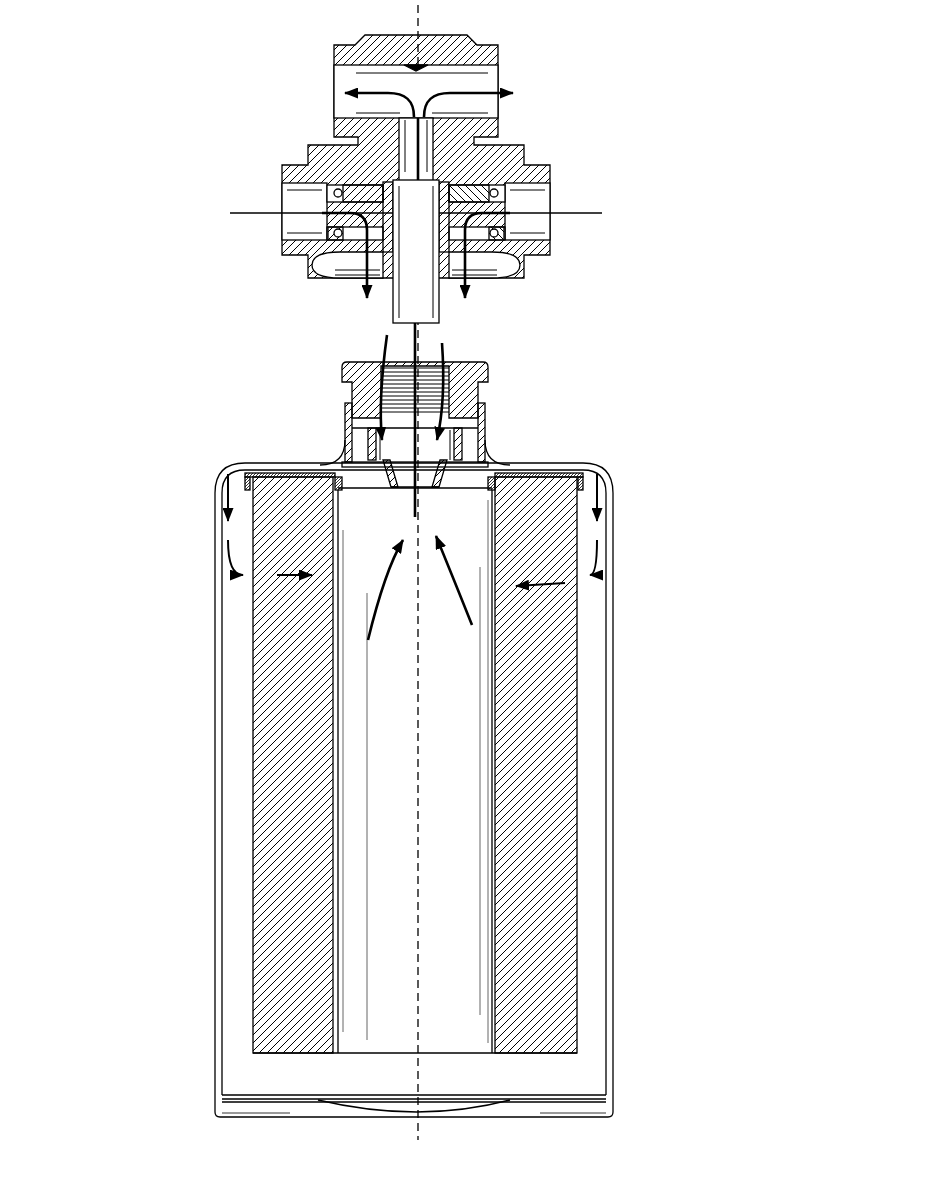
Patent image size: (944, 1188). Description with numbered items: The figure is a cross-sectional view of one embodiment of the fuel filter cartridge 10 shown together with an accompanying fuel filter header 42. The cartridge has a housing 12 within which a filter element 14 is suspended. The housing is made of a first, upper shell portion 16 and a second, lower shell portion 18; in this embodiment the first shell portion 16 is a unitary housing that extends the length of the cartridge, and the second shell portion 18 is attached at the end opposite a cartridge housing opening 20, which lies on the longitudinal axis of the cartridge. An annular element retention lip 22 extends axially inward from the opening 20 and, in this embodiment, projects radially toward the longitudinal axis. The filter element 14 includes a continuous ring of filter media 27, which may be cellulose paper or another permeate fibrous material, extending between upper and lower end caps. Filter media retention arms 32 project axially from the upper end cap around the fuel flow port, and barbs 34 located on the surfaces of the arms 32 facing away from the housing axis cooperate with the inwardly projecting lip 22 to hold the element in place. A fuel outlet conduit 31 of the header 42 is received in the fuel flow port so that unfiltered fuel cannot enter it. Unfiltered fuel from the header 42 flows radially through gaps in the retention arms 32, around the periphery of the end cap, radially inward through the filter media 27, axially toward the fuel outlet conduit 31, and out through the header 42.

The fuel filter cartridge 10 is at (173, 390).
The housing 12 is at (672, 593).
The filter element 14 is at (237, 632).
The first shell portion 16 is at (217, 578).
The second shell portion 18 is at (510, 1100).
The cartridge housing opening 20 is at (428, 354).
The annular element retention lip 22 is at (487, 458).
The filter media 27 is at (577, 777).
The fuel outlet conduit 31 is at (440, 302).
The filter media retention arms 32 is at (316, 465).
The barbs 34 is at (347, 402).
The header 42 is at (546, 48).